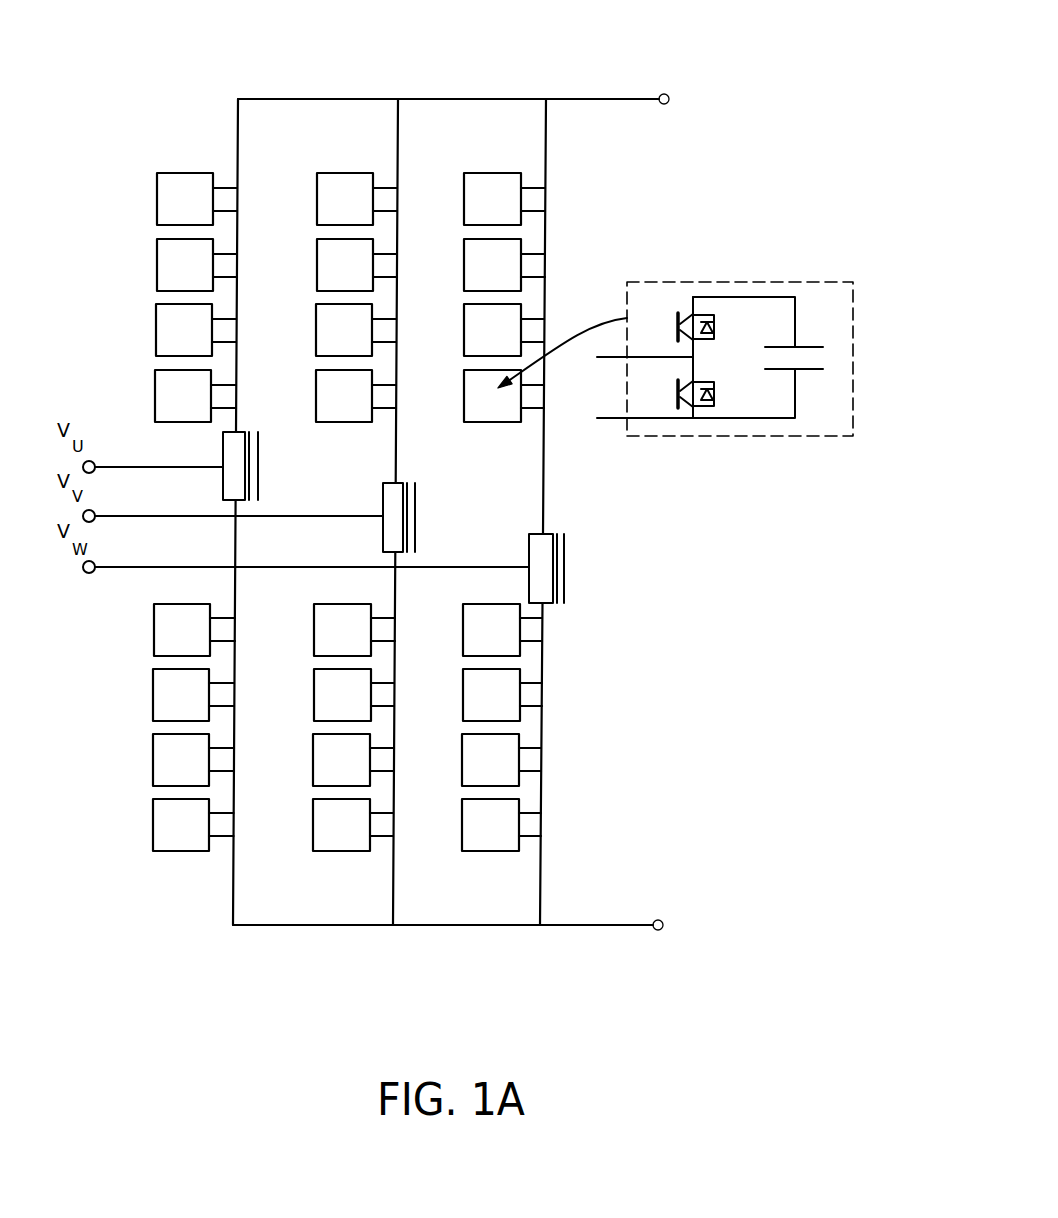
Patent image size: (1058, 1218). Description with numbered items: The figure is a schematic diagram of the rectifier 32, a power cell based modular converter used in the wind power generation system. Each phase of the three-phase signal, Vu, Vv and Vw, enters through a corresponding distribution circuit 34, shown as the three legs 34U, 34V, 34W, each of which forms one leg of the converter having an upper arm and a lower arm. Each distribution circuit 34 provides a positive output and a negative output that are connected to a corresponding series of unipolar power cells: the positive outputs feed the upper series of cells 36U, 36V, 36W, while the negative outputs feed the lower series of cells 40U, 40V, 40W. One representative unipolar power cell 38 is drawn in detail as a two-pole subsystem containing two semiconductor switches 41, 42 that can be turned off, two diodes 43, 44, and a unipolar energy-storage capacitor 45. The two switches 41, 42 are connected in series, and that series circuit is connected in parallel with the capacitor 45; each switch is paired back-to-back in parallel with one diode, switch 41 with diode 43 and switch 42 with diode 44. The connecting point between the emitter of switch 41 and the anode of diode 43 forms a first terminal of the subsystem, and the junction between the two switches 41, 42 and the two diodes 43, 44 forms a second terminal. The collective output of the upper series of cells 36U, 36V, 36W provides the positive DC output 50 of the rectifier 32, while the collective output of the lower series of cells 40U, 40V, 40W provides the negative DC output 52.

The rectifier 32 is at (752, 24).
The distribution circuit 34 is at (424, 504).
The distribution circuit for phase U 34U is at (248, 430).
The distribution circuit for phase V 34V is at (403, 482).
The distribution circuit for phase W 34W is at (553, 533).
The series of unipolar power cells (upper arm, phase U) 36U is at (265, 73).
The series of unipolar power cells (upper arm, phase V) 36V is at (393, 73).
The series of unipolar power cells (upper arm, phase W) 36W is at (537, 73).
The unipolar power cell 38 is at (150, 208).
The series of unipolar power cells (lower arm, phase U) 40U is at (260, 940).
The series of unipolar power cells (lower arm, phase V) 40V is at (388, 940).
The series of unipolar power cells (lower arm, phase W) 40W is at (532, 940).
The semiconductor switch 41 is at (675, 318).
The semiconductor switch 42 is at (676, 395).
The diode 43 is at (712, 322).
The diode 44 is at (712, 393).
The unipolar energy-storage capacitor 45 is at (810, 370).
The positive DC output 50 is at (667, 95).
The negative DC output 52 is at (660, 920).